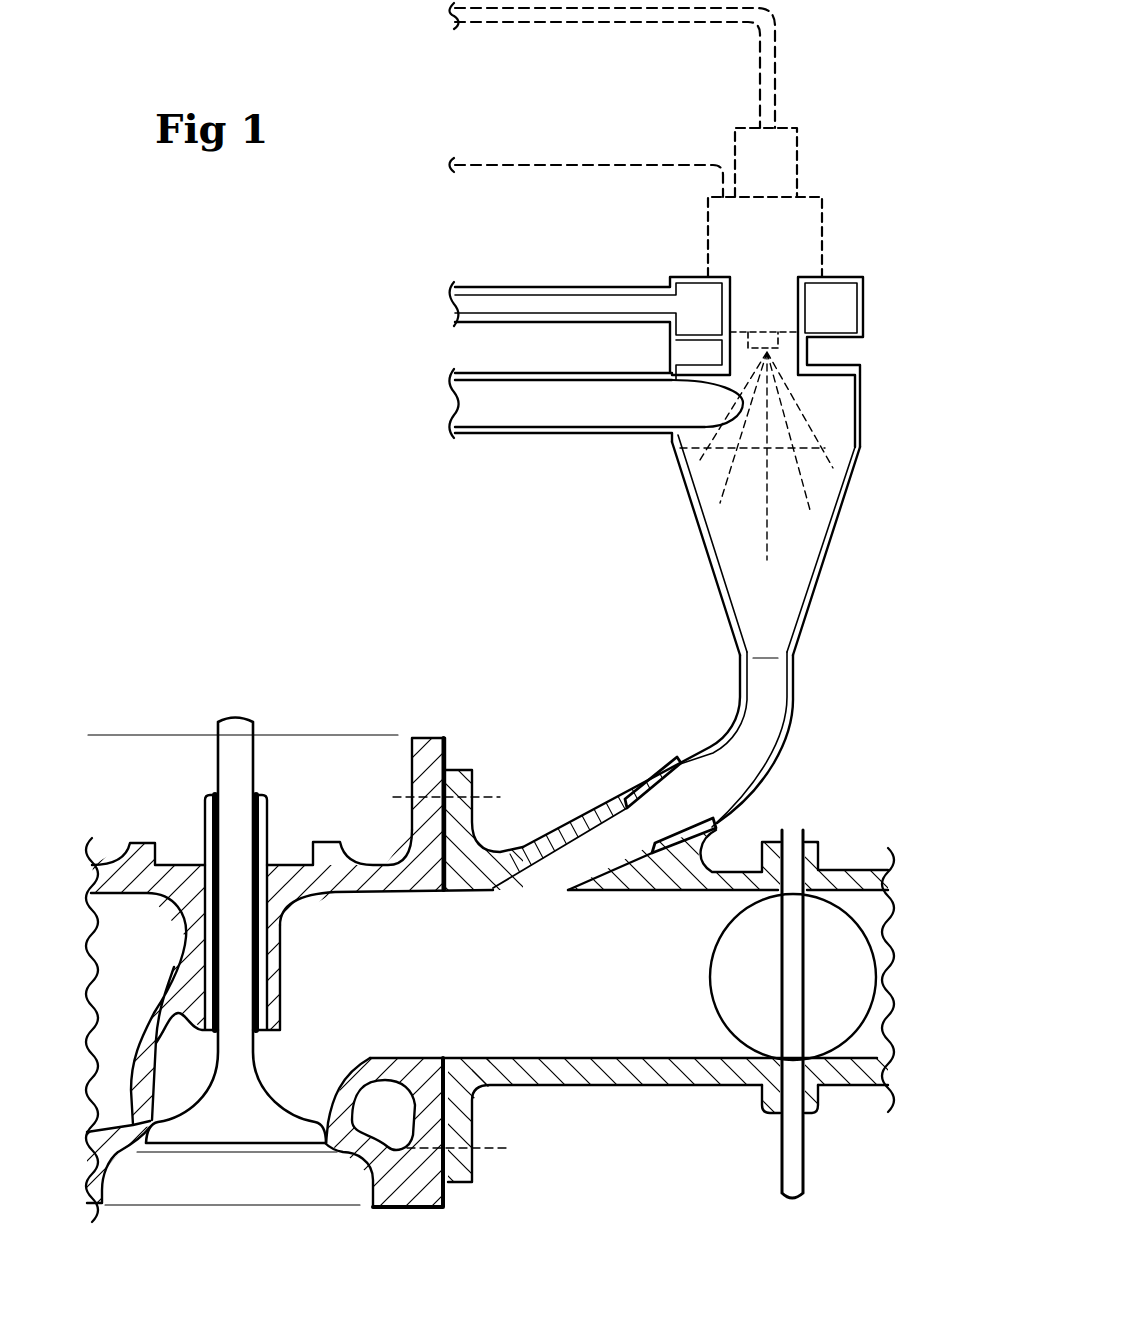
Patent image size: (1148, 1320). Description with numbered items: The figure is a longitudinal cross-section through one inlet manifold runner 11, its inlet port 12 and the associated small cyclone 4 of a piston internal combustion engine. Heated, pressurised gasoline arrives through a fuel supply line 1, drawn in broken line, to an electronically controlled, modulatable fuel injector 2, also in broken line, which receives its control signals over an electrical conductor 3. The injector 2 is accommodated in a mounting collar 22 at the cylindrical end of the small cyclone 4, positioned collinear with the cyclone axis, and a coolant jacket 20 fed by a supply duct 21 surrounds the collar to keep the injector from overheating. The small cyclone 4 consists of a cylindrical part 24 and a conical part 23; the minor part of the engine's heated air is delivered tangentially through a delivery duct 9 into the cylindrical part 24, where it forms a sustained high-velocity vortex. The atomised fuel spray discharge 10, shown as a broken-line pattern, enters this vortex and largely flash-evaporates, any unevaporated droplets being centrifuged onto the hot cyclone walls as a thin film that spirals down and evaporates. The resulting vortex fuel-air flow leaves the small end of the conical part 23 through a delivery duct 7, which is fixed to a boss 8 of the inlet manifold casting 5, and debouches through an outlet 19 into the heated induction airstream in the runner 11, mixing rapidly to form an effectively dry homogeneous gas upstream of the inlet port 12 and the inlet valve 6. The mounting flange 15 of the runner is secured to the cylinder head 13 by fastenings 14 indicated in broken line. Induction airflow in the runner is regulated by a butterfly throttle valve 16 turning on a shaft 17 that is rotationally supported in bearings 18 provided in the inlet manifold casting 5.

The fuel supply line 1 is at (780, 75).
The fuel injector 2 is at (767, 232).
The electrical conductor 3 is at (588, 165).
The small cyclone 4 is at (784, 551).
The inlet manifold casting 5 is at (595, 1077).
The inlet valve 6 is at (234, 1118).
The delivery duct 7 is at (738, 707).
The boss 8 is at (648, 770).
The delivery duct 9 is at (500, 395).
The fuel spray discharge 10 is at (745, 430).
The inlet manifold runner 11 is at (570, 985).
The inlet port 12 is at (325, 1000).
The cylinder head 13 is at (388, 872).
The fastening 14 is at (507, 1148).
The mounting flange 15 is at (460, 777).
The butterfly throttle valve 16 is at (820, 933).
The shaft 17 is at (791, 862).
The bearing 18 is at (808, 1098).
The outlet 19 is at (550, 877).
The coolant jacket 20 is at (693, 300).
The supply duct 21 is at (540, 300).
The mounting collar 22 is at (808, 355).
The conical part 23 is at (703, 537).
The cylindrical part 24 is at (860, 420).